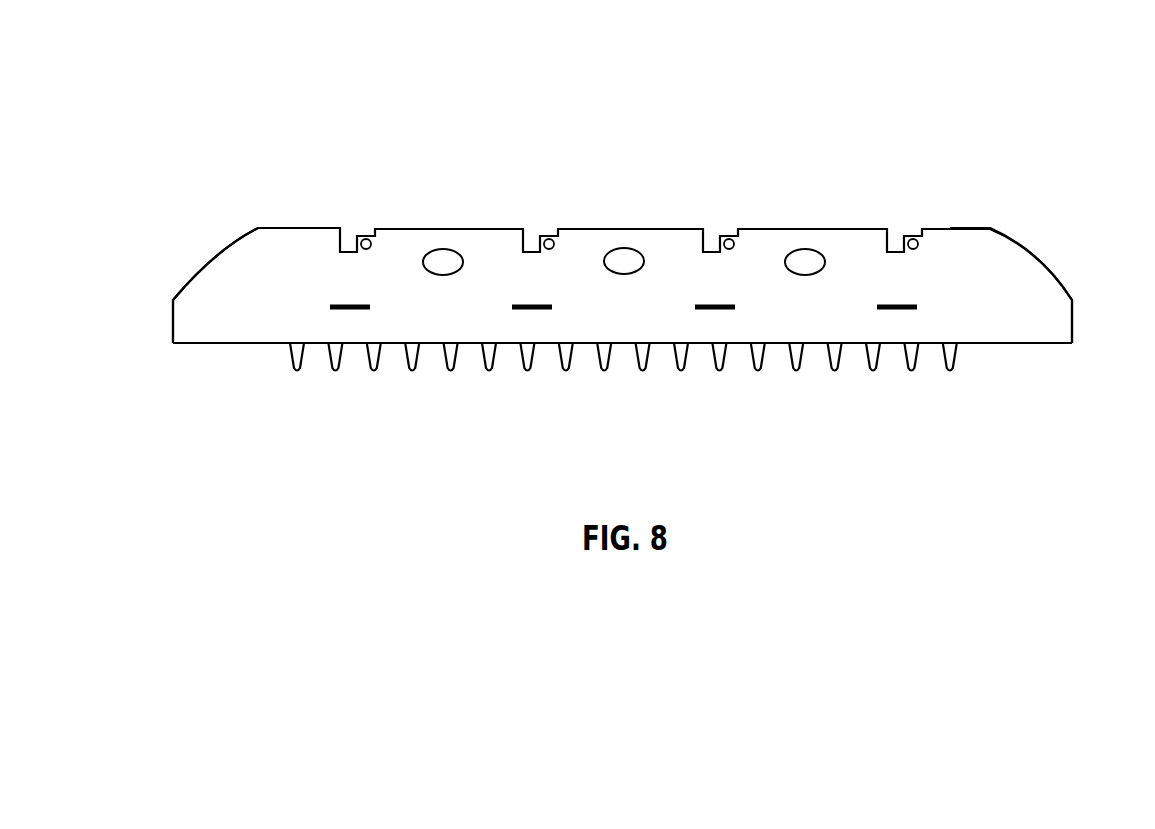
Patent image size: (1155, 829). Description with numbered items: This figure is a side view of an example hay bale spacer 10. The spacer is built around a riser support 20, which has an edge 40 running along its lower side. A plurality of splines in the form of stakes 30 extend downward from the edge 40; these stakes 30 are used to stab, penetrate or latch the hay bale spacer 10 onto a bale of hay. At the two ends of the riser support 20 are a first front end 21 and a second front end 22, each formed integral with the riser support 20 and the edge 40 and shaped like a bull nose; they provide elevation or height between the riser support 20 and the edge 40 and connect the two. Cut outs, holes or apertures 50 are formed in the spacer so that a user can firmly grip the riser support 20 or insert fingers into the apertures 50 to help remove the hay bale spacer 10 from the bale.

The hay bale spacer 10 is at (618, 241).
The riser support 20 is at (668, 250).
The first front end 21 is at (1027, 258).
The second front end 22 is at (222, 266).
The stakes 30 is at (298, 350).
The edge 40 is at (208, 345).
The aperture 50 is at (444, 264).